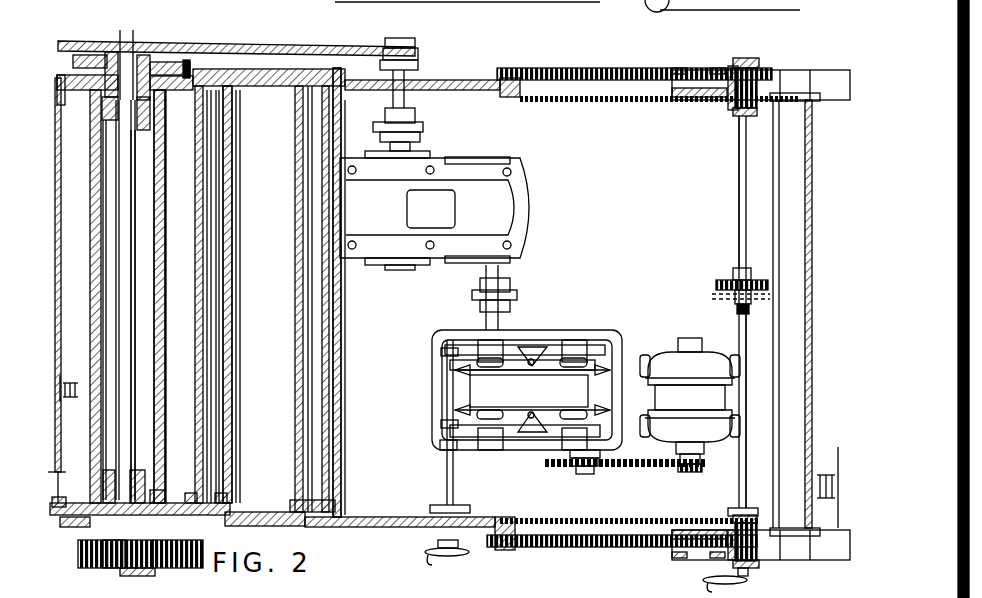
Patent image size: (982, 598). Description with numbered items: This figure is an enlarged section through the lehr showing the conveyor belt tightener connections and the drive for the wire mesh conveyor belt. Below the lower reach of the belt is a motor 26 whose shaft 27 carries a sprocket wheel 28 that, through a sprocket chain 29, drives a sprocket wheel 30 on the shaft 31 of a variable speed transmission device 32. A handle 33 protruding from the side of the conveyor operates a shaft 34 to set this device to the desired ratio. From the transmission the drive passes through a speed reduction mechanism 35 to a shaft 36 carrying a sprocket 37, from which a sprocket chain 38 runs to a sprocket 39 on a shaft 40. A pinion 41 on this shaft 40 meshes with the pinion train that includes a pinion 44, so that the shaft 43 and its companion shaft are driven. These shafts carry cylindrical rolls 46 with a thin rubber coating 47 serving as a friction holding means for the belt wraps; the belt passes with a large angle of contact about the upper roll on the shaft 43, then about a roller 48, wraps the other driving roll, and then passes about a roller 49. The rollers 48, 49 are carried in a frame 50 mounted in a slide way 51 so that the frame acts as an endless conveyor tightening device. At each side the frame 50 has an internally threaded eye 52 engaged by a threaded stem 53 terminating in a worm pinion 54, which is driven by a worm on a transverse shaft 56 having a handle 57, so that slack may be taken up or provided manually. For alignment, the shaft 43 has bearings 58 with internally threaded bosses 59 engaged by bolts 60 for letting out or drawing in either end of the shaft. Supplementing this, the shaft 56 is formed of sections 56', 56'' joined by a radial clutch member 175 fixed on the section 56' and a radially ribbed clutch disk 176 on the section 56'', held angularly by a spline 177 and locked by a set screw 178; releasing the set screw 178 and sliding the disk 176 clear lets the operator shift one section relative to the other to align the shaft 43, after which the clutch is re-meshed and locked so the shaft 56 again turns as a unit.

The motor 26 is at (700, 345).
The shaft 27 is at (700, 464).
The sprocket wheel 28 is at (815, 488).
The sprocket chain 29 is at (660, 468).
The sprocket wheel 30 is at (572, 470).
The shaft 31 is at (568, 456).
The variable speed transmission device 32 is at (605, 333).
The handle 33 is at (445, 556).
The shaft 34 is at (453, 480).
The speed reduction mechanism 35 is at (455, 175).
The shaft 36 is at (415, 102).
The sprocket 37 is at (420, 54).
The sprocket chain 38 is at (265, 37).
The sprocket 39 is at (150, 58).
The shaft 40 is at (140, 55).
The pinion 41 is at (108, 560).
The shaft 43 is at (138, 170).
The pinion 44 is at (150, 568).
The cylindrical rolls 46 is at (150, 248).
The thin rubber coating 47 is at (165, 338).
The roller 48 is at (232, 292).
The roller 49 is at (343, 345).
The frame 50 is at (455, 80).
The slide way 51 is at (508, 77).
The internally threaded eye 52 is at (557, 70).
The threaded stem 53 is at (608, 70).
The worm pinion 54 is at (757, 60).
The transverse shaft 56 is at (728, 316).
The shaft section 56' is at (719, 192).
The shaft section 56'' is at (760, 411).
The handle 57 is at (712, 582).
The bearings 58 is at (178, 62).
The internally threaded bosses 59 is at (100, 57).
The bolts 60 is at (72, 90).
The radial clutch member 175 is at (716, 280).
The clutch disk section 176 is at (712, 296).
The spline 177 is at (748, 316).
The set screw 178 is at (758, 280).